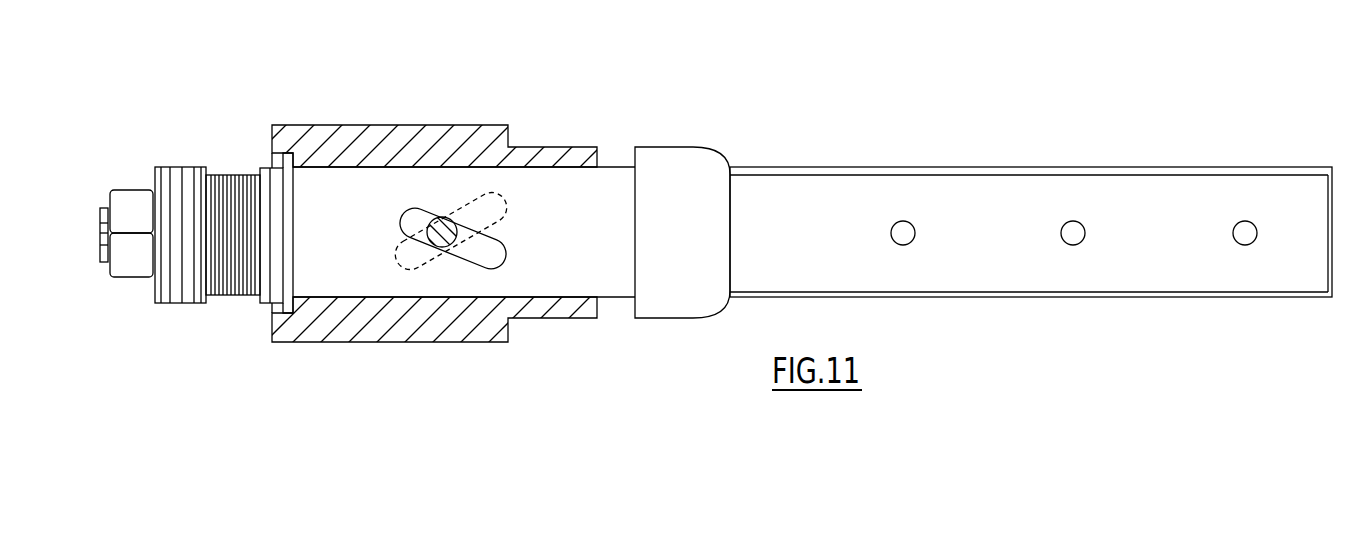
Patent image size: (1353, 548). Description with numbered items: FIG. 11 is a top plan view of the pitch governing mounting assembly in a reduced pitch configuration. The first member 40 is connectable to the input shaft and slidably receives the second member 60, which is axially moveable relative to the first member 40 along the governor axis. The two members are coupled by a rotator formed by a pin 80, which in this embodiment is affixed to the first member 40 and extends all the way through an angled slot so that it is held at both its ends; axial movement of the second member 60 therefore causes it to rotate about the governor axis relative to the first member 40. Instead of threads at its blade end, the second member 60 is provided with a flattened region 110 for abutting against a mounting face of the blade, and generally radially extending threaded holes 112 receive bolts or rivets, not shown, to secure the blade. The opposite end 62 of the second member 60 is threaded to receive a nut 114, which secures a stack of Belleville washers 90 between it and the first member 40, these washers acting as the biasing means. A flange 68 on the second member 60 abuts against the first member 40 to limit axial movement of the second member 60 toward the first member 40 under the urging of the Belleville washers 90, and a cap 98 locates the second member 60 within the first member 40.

The first member 40 is at (546, 159).
The second member 60 is at (990, 158).
The head 62 is at (99, 242).
The flange 68 is at (698, 165).
The pin 80 is at (439, 222).
The Belleville washers 90 is at (258, 166).
The cap 98 is at (206, 162).
The flattened region 110 is at (1128, 208).
The threaded holes 112 is at (900, 237).
The nut 114 is at (124, 200).